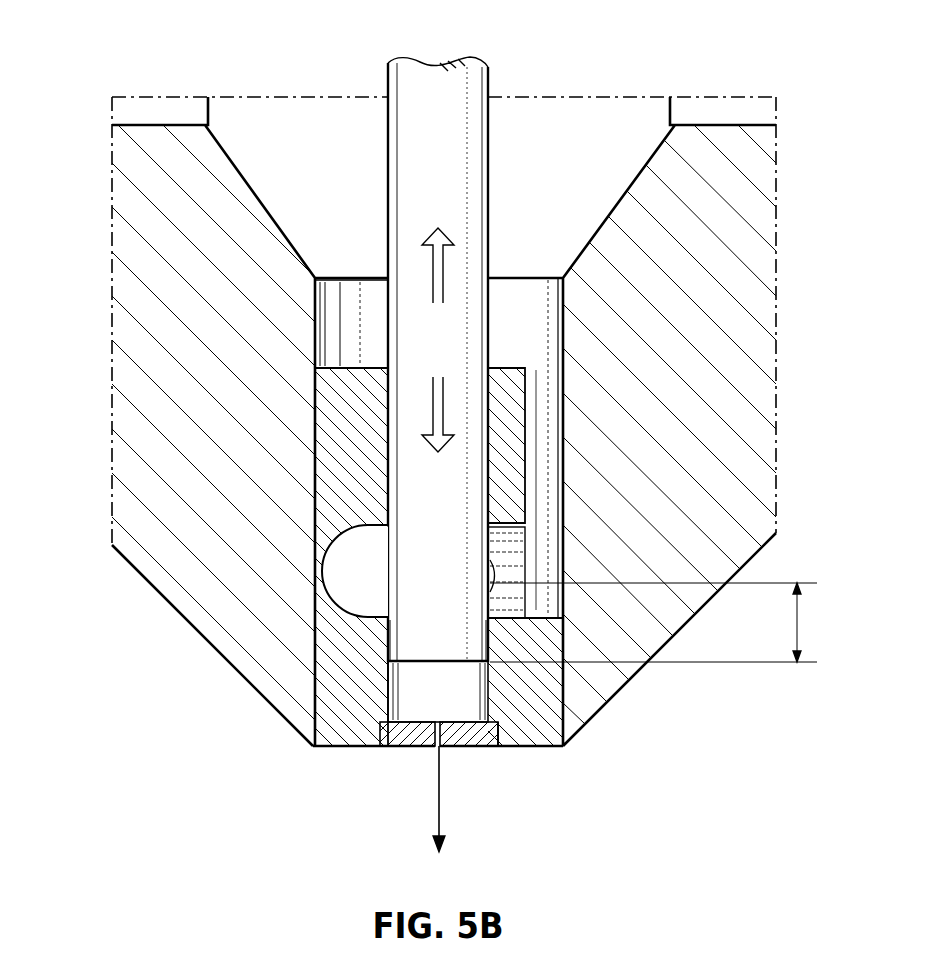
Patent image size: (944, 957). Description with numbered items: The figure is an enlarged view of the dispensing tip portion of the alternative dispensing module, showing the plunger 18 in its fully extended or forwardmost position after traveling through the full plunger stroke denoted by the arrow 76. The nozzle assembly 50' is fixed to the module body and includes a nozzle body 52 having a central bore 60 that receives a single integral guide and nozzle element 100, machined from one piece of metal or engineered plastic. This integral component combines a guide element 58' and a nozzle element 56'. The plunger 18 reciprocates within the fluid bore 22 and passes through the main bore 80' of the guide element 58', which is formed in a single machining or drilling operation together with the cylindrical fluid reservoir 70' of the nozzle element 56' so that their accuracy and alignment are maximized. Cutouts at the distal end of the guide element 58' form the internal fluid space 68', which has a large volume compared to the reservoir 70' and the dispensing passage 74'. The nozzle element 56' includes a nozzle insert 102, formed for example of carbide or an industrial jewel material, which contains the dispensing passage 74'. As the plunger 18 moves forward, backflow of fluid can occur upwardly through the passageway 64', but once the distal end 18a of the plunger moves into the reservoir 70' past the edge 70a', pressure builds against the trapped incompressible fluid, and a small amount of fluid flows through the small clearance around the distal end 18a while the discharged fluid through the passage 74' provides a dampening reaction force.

The plunger 18 is at (406, 62).
The fluid bore 22 is at (300, 150).
The integral guide and nozzle element 100 is at (370, 345).
The central bore 60 is at (560, 325).
The nozzle assembly 50' is at (486, 321).
The nozzle body 52 is at (745, 280).
The main bore 80' is at (415, 433).
The guide element 58' is at (285, 557).
The fluid passageway 64' is at (687, 490).
The internal fluid space 68' is at (270, 597).
The edge 70a' is at (470, 572).
The distal end of the plunger 18a is at (405, 635).
The nozzle insert 102 is at (390, 742).
The dispensing passage 74' is at (439, 757).
The cylindrical fluid reservoir 70' is at (451, 727).
The nozzle element 56' is at (571, 683).
The plunger stroke 76 is at (800, 622).